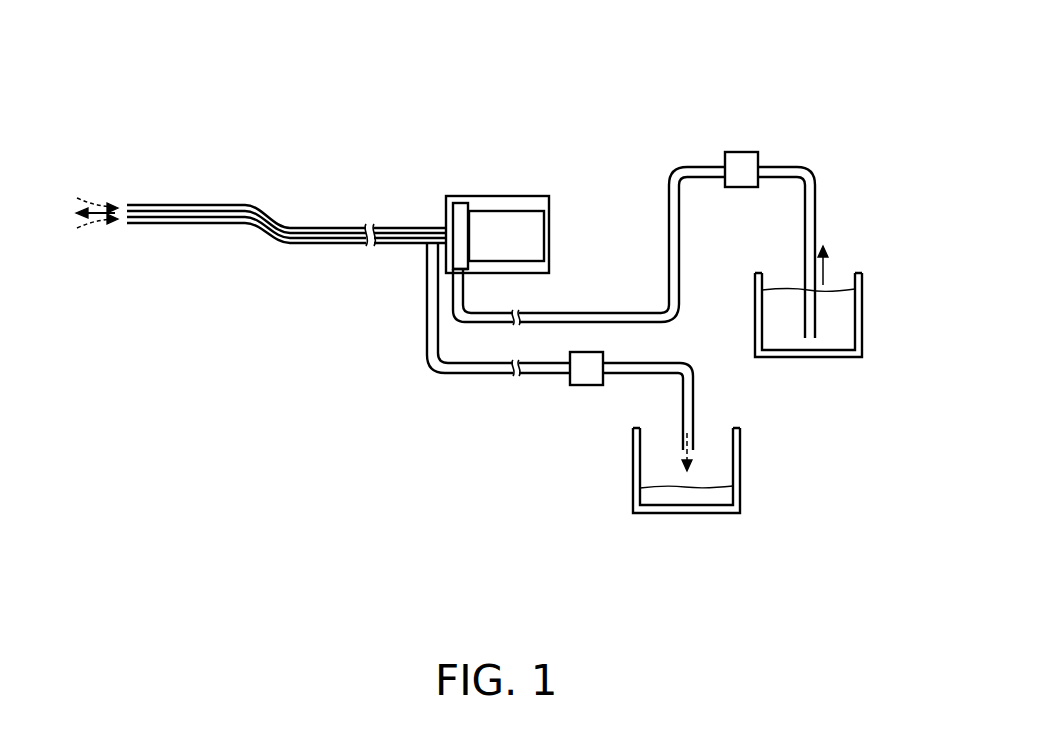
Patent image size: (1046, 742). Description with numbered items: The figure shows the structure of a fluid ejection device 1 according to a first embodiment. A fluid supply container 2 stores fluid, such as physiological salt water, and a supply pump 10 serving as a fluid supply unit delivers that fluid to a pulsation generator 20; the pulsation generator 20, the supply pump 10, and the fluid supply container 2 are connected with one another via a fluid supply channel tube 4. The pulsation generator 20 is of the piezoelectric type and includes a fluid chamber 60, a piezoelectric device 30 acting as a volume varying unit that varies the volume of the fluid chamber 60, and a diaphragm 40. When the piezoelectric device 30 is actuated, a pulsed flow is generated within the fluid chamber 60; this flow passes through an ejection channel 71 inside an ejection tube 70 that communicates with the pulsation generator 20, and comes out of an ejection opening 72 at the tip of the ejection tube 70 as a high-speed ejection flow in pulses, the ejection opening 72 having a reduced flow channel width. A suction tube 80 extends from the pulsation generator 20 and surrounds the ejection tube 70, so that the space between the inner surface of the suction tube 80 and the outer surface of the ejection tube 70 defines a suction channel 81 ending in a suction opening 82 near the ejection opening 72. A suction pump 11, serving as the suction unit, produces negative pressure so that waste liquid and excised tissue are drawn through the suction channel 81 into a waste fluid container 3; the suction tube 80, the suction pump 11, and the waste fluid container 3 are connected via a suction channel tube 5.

The fluid ejection device 1 is at (833, 108).
The fluid supply container 2 is at (863, 312).
The waste fluid container 3 is at (741, 465).
The fluid supply channel tube 4 is at (588, 313).
The suction channel tube 5 is at (463, 374).
The supply pump 10 is at (742, 152).
The suction pump 11 is at (585, 385).
The pulsation generator 20 is at (534, 177).
The piezoelectric device 30 is at (507, 209).
The diaphragm 40 is at (470, 264).
The fluid chamber 60 is at (457, 205).
The ejection tube 70 is at (343, 228).
The ejection channel 71 is at (393, 228).
The ejection opening 72 is at (125, 212).
The suction tube 80 is at (294, 228).
The suction channel 81 is at (213, 205).
The suction opening 82 is at (128, 206).